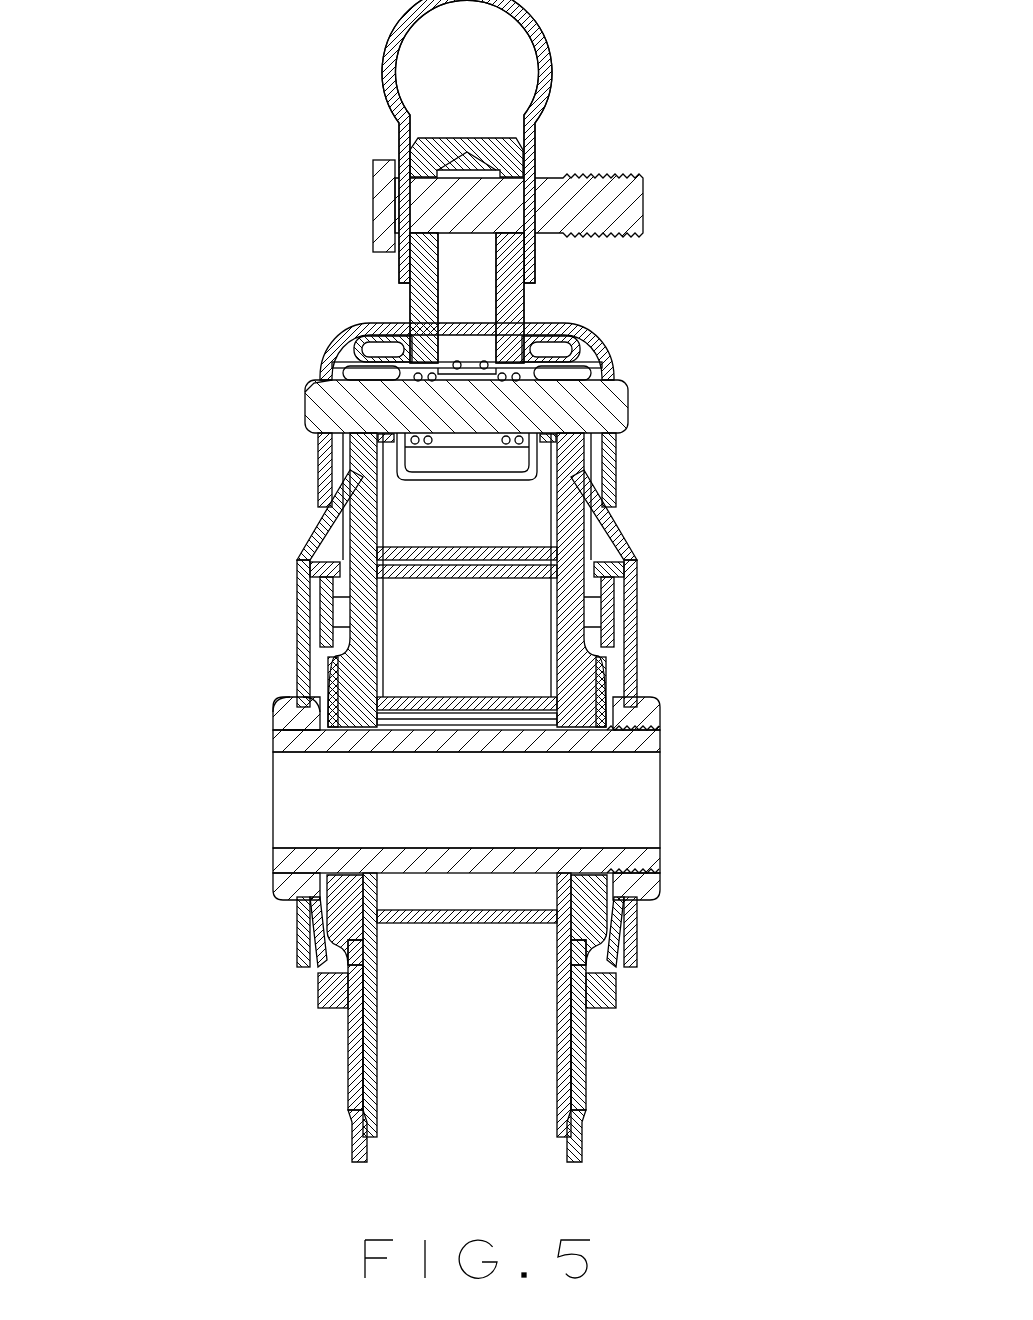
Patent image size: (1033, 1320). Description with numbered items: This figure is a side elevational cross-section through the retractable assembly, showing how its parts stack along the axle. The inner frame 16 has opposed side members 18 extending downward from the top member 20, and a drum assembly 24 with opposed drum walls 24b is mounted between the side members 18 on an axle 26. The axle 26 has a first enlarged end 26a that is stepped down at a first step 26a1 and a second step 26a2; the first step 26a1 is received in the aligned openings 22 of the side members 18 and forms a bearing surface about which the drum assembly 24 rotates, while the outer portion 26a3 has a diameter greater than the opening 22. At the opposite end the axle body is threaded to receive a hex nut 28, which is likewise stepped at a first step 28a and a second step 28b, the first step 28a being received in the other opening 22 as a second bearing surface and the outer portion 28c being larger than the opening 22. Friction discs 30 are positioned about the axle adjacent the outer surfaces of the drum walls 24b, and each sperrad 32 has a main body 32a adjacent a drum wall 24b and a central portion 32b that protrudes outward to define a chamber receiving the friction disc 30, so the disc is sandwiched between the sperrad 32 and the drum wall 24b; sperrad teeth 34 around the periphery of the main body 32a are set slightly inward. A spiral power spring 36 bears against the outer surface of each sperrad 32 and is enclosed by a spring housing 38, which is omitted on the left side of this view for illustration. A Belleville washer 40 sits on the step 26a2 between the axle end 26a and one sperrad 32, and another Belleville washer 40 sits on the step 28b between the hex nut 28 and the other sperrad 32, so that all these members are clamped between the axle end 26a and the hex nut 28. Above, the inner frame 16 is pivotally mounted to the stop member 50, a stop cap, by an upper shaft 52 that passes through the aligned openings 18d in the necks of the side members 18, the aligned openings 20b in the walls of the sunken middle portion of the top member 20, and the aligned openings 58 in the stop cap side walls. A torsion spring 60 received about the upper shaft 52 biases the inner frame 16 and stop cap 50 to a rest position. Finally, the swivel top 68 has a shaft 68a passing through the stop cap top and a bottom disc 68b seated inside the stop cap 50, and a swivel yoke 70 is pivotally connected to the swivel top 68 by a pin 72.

The inner frame 16 is at (446, 596).
The side member 18 is at (300, 633).
The aligned openings 18d is at (313, 447).
The top member 20 is at (600, 375).
The aligned openings 20b is at (555, 400).
The aligned openings 22 is at (300, 888).
The drum assembly 24 is at (471, 1128).
The drum walls 24b is at (557, 1065).
The axle 26 is at (655, 744).
The first enlarged end 26a is at (290, 880).
The first step 26a1 is at (300, 698).
The second step 26a2 is at (310, 738).
The outer portion 26a3 is at (290, 698).
The hex nut 28 is at (662, 872).
The first step 28a is at (640, 708).
The second step 28b is at (628, 960).
The outer portion 28c is at (665, 902).
The friction discs 30 is at (573, 920).
The sperrads 32 is at (355, 540).
The main body 32a is at (585, 1065).
The central portion 32b is at (560, 975).
The sperrad teeth 34 is at (583, 1138).
The spiral power spring 36 is at (612, 608).
The spring housing 38 is at (620, 652).
The Belleville washer 40 is at (320, 668).
The stop member 50 is at (333, 335).
The upper shaft 52 is at (632, 398).
The aligned openings 58 is at (308, 390).
The torsion spring 60 is at (555, 358).
The swivel top 68 is at (528, 295).
The shaft 68a is at (385, 345).
The bottom disc 68b is at (395, 355).
The swivel yoke 70 is at (543, 48).
The pin 72 is at (636, 182).